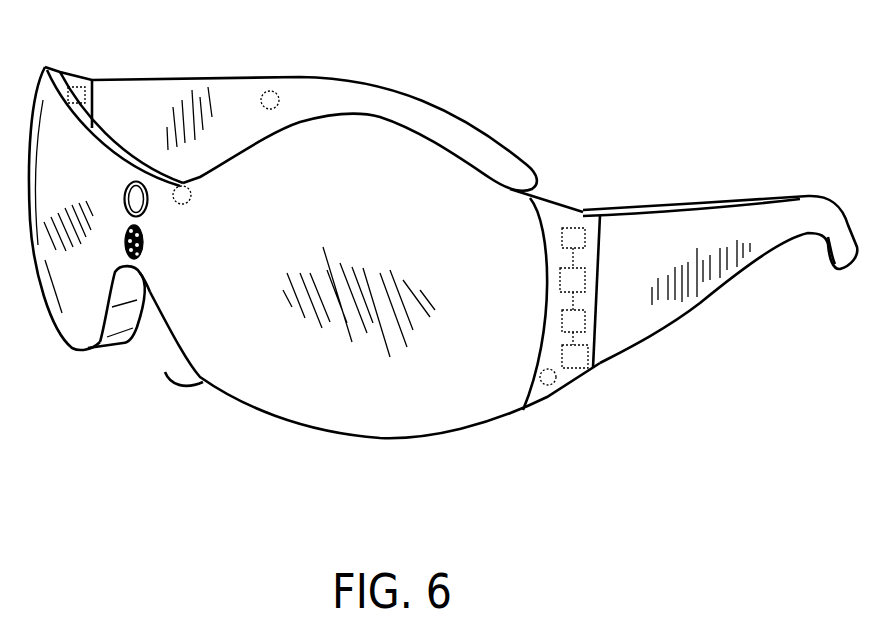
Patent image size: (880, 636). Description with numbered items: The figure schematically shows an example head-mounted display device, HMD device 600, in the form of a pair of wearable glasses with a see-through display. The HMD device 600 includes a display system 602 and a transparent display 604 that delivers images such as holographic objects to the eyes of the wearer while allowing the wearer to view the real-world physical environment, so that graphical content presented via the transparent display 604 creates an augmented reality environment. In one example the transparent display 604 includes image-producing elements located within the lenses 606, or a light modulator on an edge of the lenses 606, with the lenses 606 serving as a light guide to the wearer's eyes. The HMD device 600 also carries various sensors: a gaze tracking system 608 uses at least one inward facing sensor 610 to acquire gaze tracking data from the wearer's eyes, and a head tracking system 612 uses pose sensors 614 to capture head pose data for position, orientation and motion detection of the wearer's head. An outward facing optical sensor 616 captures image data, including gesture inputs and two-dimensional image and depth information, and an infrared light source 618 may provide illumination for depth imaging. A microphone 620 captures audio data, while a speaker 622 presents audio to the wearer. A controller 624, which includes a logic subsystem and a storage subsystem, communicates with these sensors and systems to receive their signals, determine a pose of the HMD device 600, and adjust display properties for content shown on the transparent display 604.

The HMD device 600 is at (476, 66).
The display system 602 is at (573, 227).
The transparent display 604 is at (307, 398).
The lenses 606 is at (117, 318).
The gaze tracking system 608 is at (585, 282).
The inward facing sensor 610 is at (181, 185).
The head tracking system 612 is at (586, 322).
The pose sensors 614 is at (585, 360).
The optical sensor 616 is at (143, 247).
The infrared light source 618 is at (148, 202).
The microphone 620 is at (548, 385).
The speaker 622 is at (272, 90).
The controller 624 is at (75, 86).